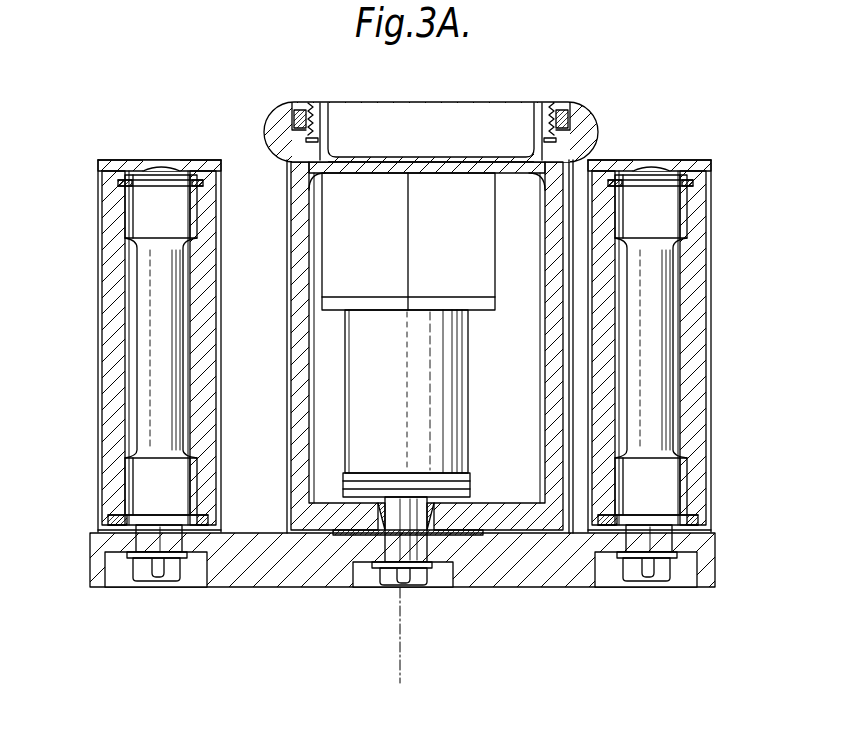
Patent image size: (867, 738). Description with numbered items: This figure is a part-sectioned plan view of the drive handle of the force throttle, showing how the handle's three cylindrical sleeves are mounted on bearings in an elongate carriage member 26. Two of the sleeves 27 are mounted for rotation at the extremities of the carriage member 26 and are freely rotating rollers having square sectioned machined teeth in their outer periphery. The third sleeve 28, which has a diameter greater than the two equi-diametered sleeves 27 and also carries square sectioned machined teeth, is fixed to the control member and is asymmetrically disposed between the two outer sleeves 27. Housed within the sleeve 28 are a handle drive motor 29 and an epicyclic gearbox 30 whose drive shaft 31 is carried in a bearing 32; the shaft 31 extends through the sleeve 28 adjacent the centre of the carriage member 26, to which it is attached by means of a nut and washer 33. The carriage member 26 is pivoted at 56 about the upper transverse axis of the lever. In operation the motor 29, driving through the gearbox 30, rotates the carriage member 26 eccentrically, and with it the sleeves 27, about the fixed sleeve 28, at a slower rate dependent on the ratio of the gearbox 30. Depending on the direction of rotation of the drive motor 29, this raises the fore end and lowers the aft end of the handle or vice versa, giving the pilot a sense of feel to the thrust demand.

The carriage member 26 is at (538, 588).
The sleeves 27 is at (107, 396).
The third sleeve 28 is at (299, 397).
The handle drive motor 29 is at (450, 388).
The epicyclic gearbox 30 is at (452, 283).
The drive shaft 31 is at (388, 588).
The bearing 32 is at (372, 530).
The nut and washer 33 is at (408, 590).
The pivot 56 is at (398, 665).